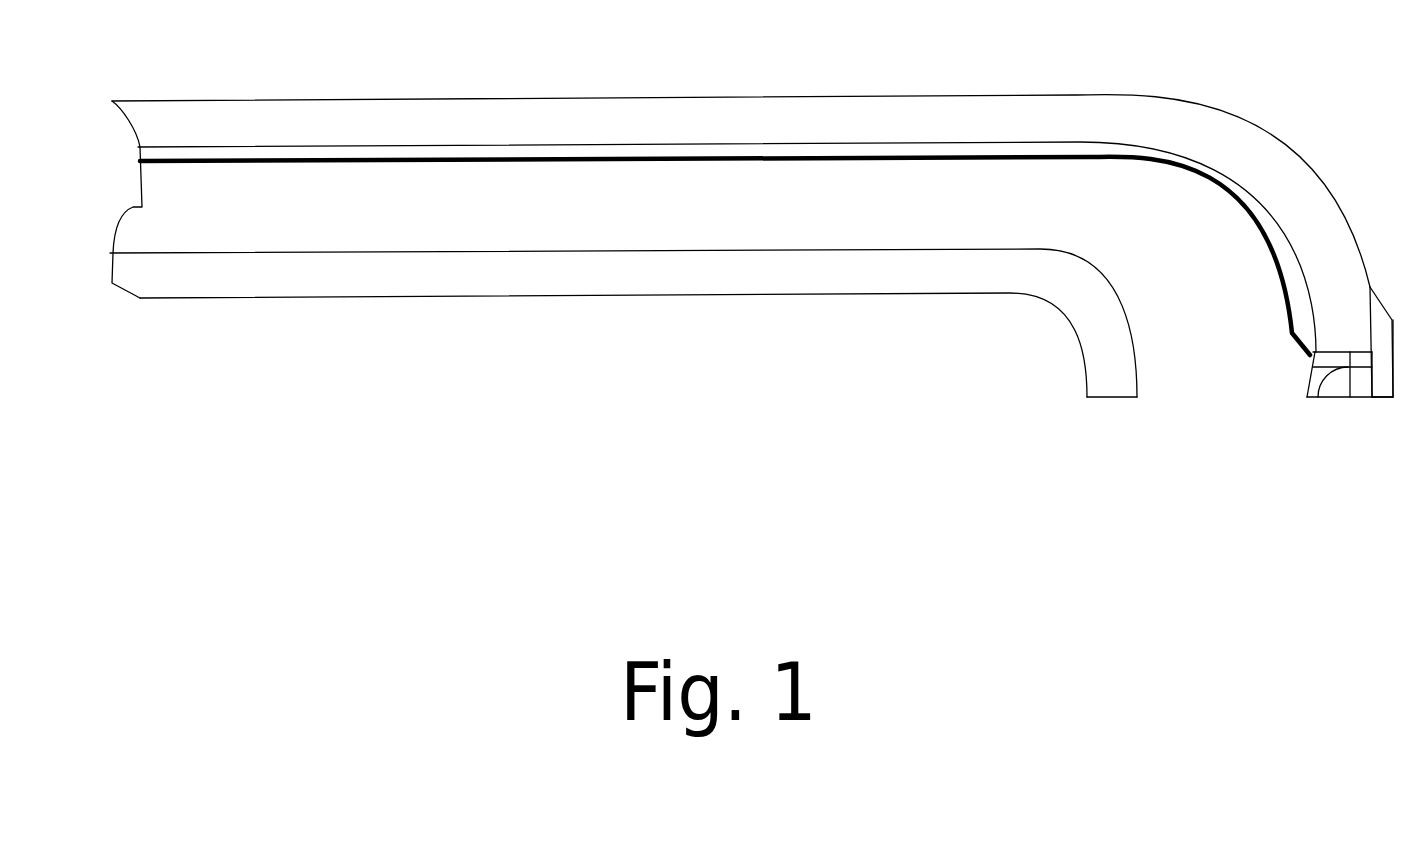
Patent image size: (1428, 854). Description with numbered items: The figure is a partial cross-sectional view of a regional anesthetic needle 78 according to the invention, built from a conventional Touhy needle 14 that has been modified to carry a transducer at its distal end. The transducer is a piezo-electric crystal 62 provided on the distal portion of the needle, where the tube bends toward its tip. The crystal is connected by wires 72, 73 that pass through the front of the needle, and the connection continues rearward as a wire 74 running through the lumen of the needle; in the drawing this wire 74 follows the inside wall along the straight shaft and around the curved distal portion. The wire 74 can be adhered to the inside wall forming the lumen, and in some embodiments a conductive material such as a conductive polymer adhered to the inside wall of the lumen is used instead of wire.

The Touhy needle 14 is at (756, 97).
The wire 74 is at (473, 158).
The regional anesthetic needle 78 is at (664, 372).
The wire 72 is at (1317, 397).
The wire 73 is at (1349, 397).
The piezo-electric crystal 62 is at (1385, 397).